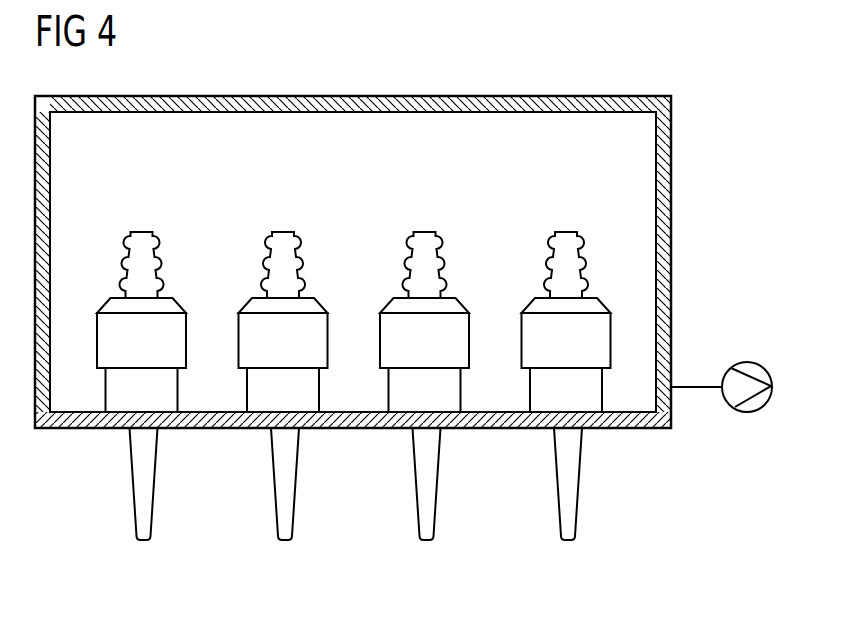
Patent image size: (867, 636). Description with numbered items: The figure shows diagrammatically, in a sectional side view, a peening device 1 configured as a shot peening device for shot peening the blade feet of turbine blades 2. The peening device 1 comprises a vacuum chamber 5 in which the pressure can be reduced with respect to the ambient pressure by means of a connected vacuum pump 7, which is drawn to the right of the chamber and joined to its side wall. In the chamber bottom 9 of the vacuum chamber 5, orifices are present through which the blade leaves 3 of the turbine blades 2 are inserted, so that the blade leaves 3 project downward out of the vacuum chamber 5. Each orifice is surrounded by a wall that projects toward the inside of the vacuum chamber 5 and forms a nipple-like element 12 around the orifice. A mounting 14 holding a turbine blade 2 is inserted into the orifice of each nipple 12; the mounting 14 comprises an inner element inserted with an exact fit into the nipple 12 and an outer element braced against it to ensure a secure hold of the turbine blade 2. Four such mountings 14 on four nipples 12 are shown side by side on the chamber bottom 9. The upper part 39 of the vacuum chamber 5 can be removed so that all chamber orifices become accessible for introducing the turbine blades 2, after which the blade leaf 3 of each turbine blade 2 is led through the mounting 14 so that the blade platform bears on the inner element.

The peening device 1 is at (637, 67).
The turbine blade 2 is at (378, 385).
The blade leaf 3 is at (374, 484).
The vacuum chamber 5 is at (638, 180).
The vacuum pump 7 is at (749, 362).
The chamber bottom 9 is at (623, 422).
The nipple-like element 12 is at (383, 390).
The mounting 14 is at (378, 299).
The upper part 39 is at (517, 102).